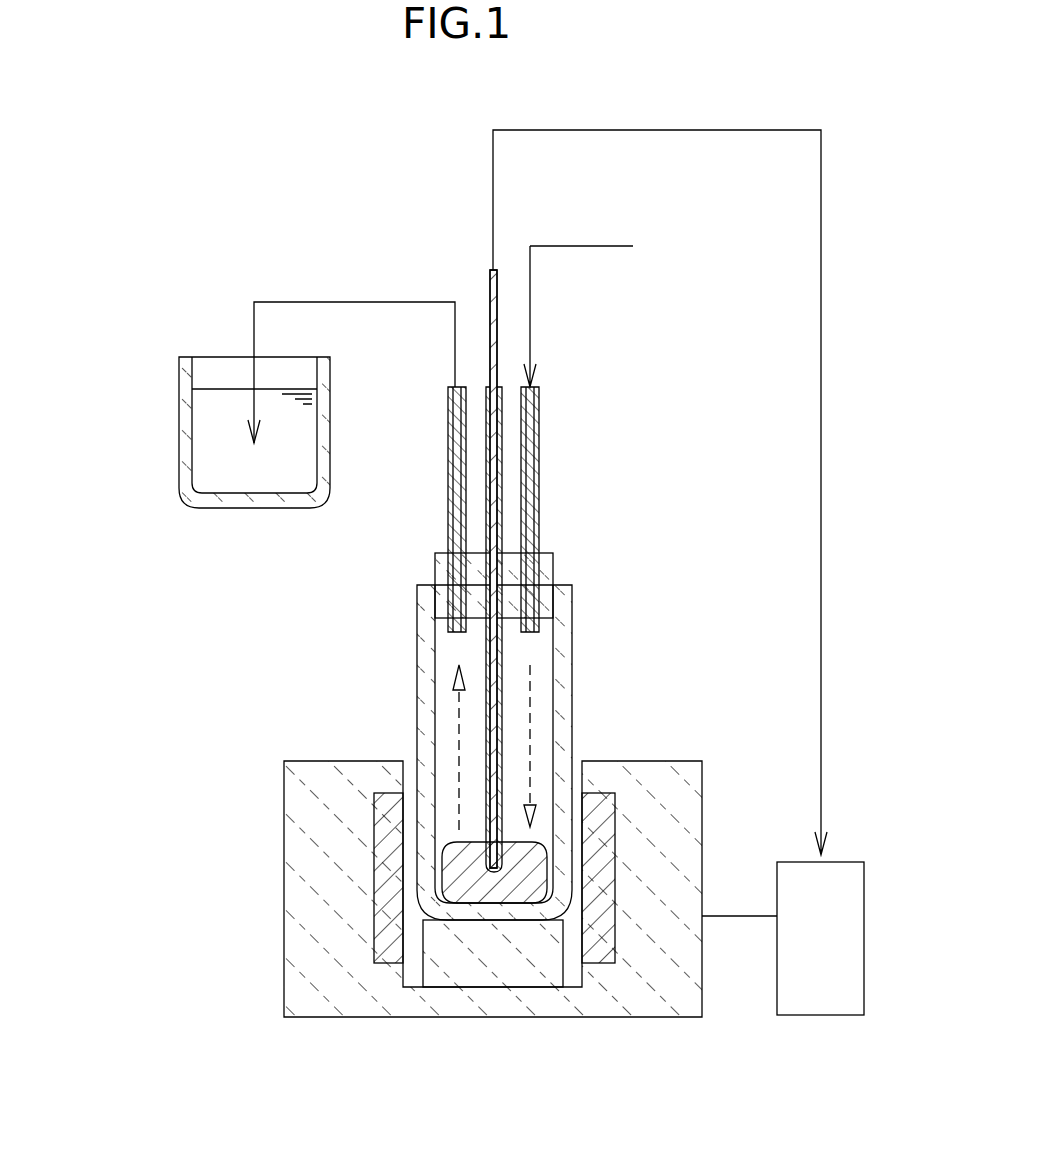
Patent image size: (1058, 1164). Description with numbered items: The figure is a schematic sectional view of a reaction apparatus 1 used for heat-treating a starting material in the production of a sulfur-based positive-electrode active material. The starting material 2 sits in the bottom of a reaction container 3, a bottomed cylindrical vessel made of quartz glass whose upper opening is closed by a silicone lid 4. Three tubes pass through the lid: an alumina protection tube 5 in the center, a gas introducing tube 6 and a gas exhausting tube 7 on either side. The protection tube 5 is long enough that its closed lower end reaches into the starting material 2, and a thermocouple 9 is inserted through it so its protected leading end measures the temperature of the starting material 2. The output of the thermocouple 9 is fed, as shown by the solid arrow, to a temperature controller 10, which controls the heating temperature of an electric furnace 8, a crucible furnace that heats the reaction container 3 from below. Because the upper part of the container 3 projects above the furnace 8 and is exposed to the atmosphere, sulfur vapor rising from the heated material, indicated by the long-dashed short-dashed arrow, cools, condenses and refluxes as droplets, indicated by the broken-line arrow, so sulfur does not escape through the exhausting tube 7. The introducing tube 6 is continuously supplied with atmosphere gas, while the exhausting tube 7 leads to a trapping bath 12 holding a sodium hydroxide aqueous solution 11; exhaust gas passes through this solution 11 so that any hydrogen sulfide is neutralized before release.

The reaction apparatus 1 is at (285, 162).
The starting material 2 is at (513, 883).
The reaction container 3 is at (562, 635).
The silicone lid 4 is at (550, 562).
The alumina protection tube 5 is at (500, 715).
The gas introducing tube 6 is at (540, 447).
The gas exhausting tube 7 is at (448, 508).
The electric furnace 8 is at (297, 890).
The thermocouple 9 is at (490, 300).
The temperature controller 10 is at (818, 1005).
The sodium hydroxide aqueous solution 11 is at (240, 480).
The trapping bath 12 is at (183, 443).